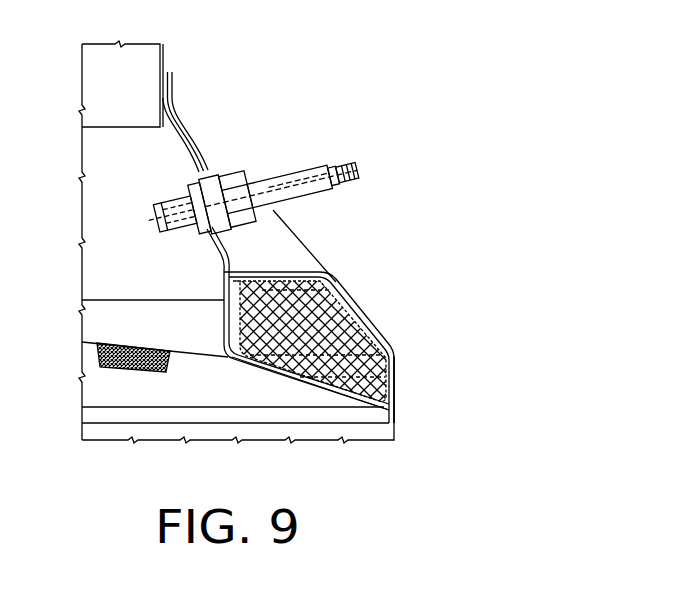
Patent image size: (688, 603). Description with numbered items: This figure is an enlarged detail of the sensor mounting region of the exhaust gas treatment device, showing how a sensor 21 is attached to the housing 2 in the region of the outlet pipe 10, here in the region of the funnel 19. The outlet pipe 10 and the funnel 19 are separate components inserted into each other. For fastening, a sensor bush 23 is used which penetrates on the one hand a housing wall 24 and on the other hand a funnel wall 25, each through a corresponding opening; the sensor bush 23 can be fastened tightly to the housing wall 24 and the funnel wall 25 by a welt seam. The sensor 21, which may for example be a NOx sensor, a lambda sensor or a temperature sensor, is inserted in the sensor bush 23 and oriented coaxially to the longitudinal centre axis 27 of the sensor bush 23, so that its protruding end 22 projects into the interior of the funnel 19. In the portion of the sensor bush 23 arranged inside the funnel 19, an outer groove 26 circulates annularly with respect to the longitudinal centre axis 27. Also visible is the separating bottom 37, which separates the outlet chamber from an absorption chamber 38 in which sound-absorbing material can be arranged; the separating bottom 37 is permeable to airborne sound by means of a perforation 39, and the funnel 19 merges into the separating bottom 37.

The housing 2 is at (384, 328).
The outlet pipe 10 is at (93, 76).
The funnel 19 is at (100, 142).
The sensor 21 is at (315, 162).
The protruding end 22 is at (157, 217).
The sensor bush 23 is at (213, 176).
The housing wall 24 is at (238, 257).
The funnel wall 25 is at (227, 252).
The outer groove 26 is at (188, 166).
The longitudinal centre axis 27 is at (293, 186).
The separating bottom 37 is at (300, 367).
The absorption chamber 38 is at (330, 318).
The perforation 39 is at (170, 358).